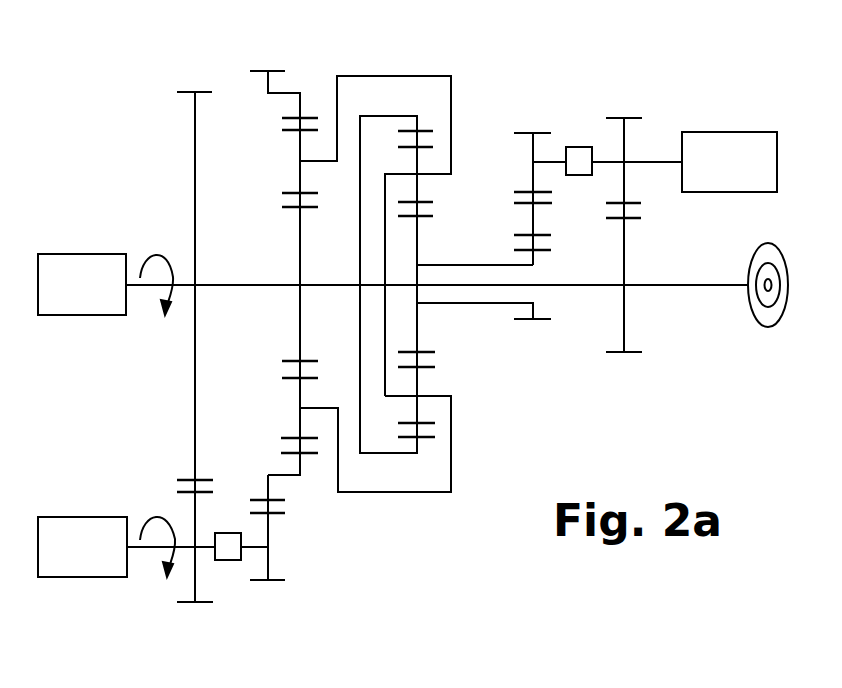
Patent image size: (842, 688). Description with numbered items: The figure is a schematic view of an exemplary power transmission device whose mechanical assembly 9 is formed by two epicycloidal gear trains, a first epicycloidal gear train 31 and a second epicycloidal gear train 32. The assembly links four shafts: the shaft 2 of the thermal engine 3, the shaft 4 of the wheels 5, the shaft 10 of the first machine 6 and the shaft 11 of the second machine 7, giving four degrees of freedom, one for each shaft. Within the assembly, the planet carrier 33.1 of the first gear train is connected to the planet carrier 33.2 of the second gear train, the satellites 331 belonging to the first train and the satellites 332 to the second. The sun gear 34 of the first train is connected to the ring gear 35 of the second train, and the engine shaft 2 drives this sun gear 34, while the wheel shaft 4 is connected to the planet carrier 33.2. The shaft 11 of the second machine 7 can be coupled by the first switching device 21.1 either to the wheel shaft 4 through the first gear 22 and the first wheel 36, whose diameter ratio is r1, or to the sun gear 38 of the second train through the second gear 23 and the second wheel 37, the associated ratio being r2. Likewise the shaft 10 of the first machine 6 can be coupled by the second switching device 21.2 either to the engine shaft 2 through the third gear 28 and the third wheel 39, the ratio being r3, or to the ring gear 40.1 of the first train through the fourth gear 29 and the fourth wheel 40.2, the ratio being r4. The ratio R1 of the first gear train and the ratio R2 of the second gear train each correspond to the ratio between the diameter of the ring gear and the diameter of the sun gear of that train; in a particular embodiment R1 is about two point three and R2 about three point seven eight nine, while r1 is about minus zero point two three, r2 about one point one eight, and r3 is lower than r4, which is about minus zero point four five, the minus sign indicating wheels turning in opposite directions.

The shaft of the thermal engine 2 is at (230, 286).
The thermal engine 3 is at (86, 254).
The shaft of the wheels 4 is at (680, 286).
The wheels 5 is at (788, 263).
The first machine 6 is at (88, 517).
The second machine 7 is at (728, 132).
The mechanical assembly 9 is at (470, 84).
The shaft of the first machine 10 is at (145, 548).
The shaft of the second machine 11 is at (603, 162).
The first switching device 21.1 is at (578, 147).
The second switching device 21.2 is at (227, 560).
The first gear 22 is at (625, 142).
The second gear 23 is at (533, 147).
The third gear 28 is at (197, 587).
The fourth gear 29 is at (268, 560).
The first epicycloidal gear train 31 is at (289, 298).
The second epicycloidal gear train 32 is at (427, 243).
The planet carrier of the first gear train 33.1 is at (380, 76).
The planet carrier of the second gear train 33.2 is at (385, 258).
The sun gear of the first gear train 34 is at (300, 230).
The ring gear of the second gear train 35 is at (373, 116).
The first wheel 36 is at (624, 257).
The second wheel 37 is at (533, 220).
The sun gear of the second gear train 38 is at (453, 265).
The third wheel 39 is at (195, 383).
The ring gear of the first gear train 40.1 is at (299, 463).
The fourth wheel 40.2 is at (268, 487).
The satellites of the first gear train 331 is at (300, 170).
The satellites of the second gear train 332 is at (418, 386).
The ratio of the first gear train R1 is at (316, 369).
The ratio of the second gear train R2 is at (474, 339).
The first ratio r1 is at (642, 211).
The second ratio r2 is at (551, 201).
The third ratio r3 is at (176, 485).
The fourth ratio r4 is at (287, 506).